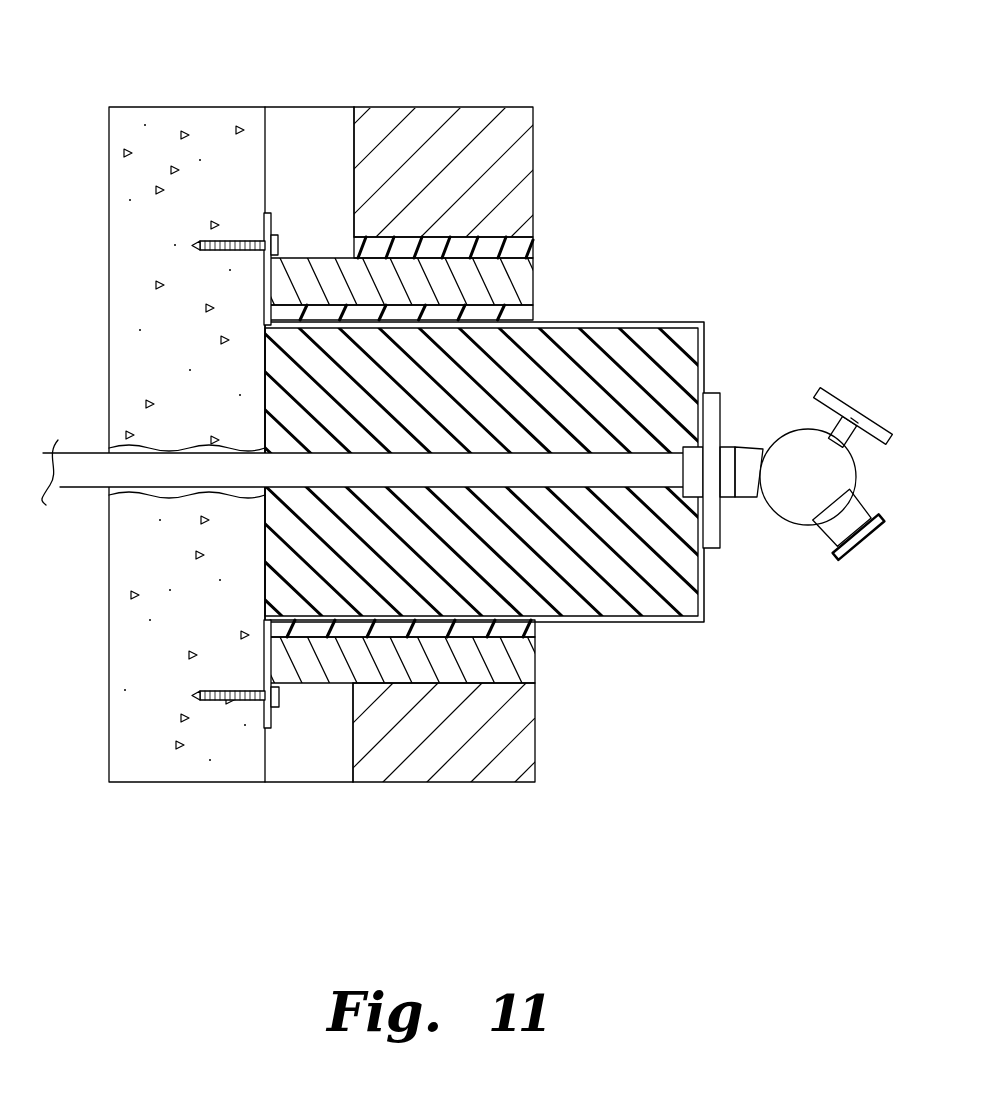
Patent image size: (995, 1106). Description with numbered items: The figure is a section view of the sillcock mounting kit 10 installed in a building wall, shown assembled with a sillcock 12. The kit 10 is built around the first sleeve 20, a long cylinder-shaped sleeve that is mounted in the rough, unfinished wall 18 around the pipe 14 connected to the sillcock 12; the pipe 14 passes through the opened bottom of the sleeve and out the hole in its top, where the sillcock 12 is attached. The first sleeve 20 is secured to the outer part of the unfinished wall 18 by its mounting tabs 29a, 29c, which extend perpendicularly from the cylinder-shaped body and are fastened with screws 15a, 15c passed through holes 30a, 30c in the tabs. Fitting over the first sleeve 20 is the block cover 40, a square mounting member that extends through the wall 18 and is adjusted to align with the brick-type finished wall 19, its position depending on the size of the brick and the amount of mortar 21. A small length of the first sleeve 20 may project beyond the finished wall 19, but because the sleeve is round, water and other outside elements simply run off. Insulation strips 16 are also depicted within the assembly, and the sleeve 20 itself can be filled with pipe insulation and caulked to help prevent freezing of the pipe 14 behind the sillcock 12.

The mounting kit 10 is at (772, 195).
The sillcock 12 is at (833, 557).
The pipe 14 is at (83, 487).
The screw 15a is at (192, 696).
The screw 15c is at (190, 242).
The insulation strip 16 is at (535, 245).
The wall 18 is at (118, 107).
The finished wall 19 is at (478, 107).
The first sleeve 20 is at (705, 622).
The mortar 21 is at (337, 783).
The tab 29a is at (275, 708).
The tab 29c is at (272, 216).
The hole 30a is at (262, 703).
The hole 30c is at (266, 242).
The block cover 40 is at (535, 667).